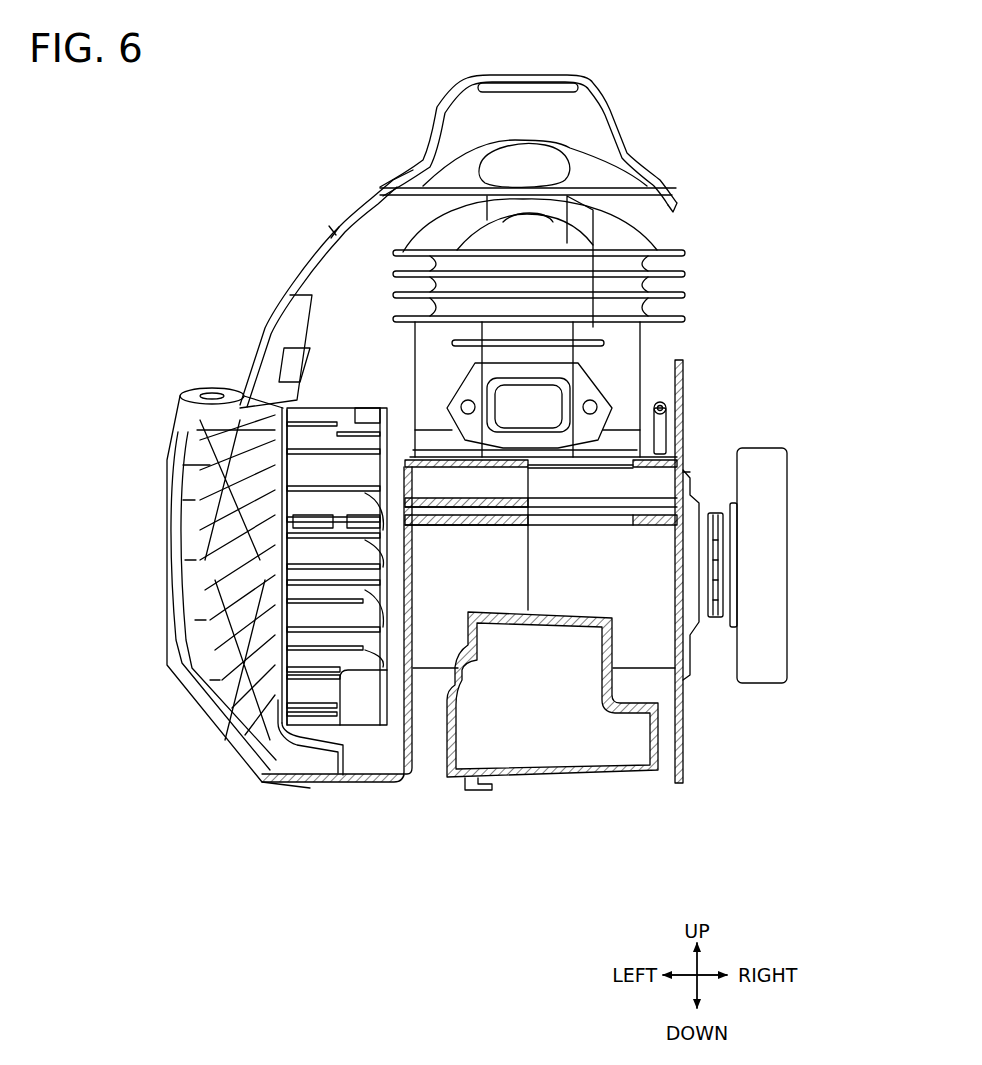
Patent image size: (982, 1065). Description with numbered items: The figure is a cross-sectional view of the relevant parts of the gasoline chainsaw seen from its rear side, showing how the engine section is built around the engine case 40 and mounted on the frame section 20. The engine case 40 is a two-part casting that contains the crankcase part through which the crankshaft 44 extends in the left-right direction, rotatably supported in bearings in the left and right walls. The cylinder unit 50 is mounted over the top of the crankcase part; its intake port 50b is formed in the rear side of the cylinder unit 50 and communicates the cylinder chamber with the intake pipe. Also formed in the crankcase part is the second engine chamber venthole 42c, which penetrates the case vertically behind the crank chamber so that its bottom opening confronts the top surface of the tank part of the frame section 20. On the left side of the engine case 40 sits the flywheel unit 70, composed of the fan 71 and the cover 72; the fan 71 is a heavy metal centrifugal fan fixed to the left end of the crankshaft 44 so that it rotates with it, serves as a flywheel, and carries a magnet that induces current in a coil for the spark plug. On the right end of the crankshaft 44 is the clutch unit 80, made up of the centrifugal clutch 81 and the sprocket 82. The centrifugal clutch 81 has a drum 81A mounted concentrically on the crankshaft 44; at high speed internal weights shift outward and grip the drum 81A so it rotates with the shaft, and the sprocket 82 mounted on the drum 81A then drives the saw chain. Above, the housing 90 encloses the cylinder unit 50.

The frame section 20 is at (545, 778).
The engine case 40 is at (658, 607).
The second engine chamber venthole 42c is at (498, 517).
The crankshaft 44 is at (412, 620).
The cylinder unit 50 is at (690, 255).
The intake port 50b is at (510, 423).
The flywheel unit 70 is at (300, 810).
The fan 71 is at (370, 700).
The cover 72 is at (230, 747).
The clutch unit 80 is at (768, 712).
The centrifugal clutch 81 is at (765, 448).
The drum 81A is at (760, 640).
The sprocket 82 is at (711, 515).
The housing 90 is at (658, 170).